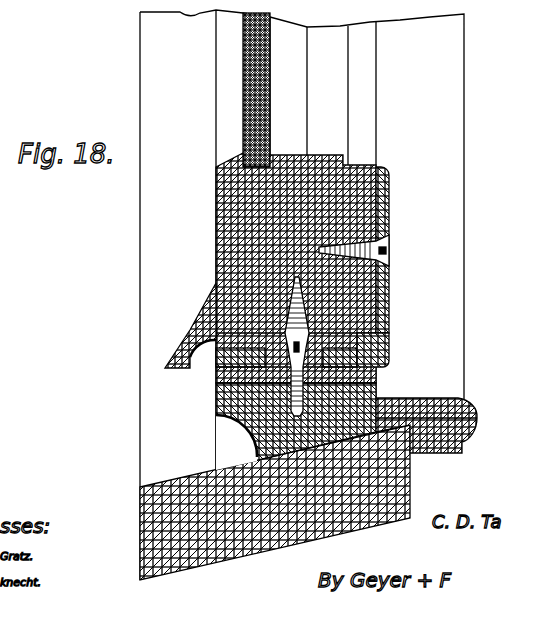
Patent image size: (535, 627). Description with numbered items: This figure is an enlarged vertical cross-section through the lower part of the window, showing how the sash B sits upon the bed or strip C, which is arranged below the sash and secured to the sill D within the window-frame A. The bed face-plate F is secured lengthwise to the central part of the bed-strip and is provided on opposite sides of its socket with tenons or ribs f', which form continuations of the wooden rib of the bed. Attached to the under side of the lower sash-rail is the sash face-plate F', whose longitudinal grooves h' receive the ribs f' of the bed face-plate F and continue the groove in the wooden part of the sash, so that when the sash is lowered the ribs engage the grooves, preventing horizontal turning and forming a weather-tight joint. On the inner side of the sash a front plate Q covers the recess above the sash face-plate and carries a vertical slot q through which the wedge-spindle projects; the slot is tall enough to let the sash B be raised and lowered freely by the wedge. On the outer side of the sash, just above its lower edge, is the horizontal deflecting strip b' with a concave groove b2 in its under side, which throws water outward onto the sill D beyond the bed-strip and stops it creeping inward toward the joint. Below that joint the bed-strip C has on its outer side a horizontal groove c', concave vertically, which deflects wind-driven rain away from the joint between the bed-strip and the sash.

The sash B is at (165, 195).
The longitudinal grooves h' is at (244, 334).
The deflecting strip b' is at (190, 325).
The concave groove b2 is at (190, 346).
The horizontal groove c' is at (296, 426).
The sill D is at (140, 510).
The front plate Q is at (392, 190).
The vertical slot q is at (392, 318).
The sash face-plate F' is at (321, 345).
The tenons or ribs f' is at (398, 350).
The bed face-plate F is at (315, 379).
The bed or strip C is at (478, 427).
The window-frame A is at (415, 478).